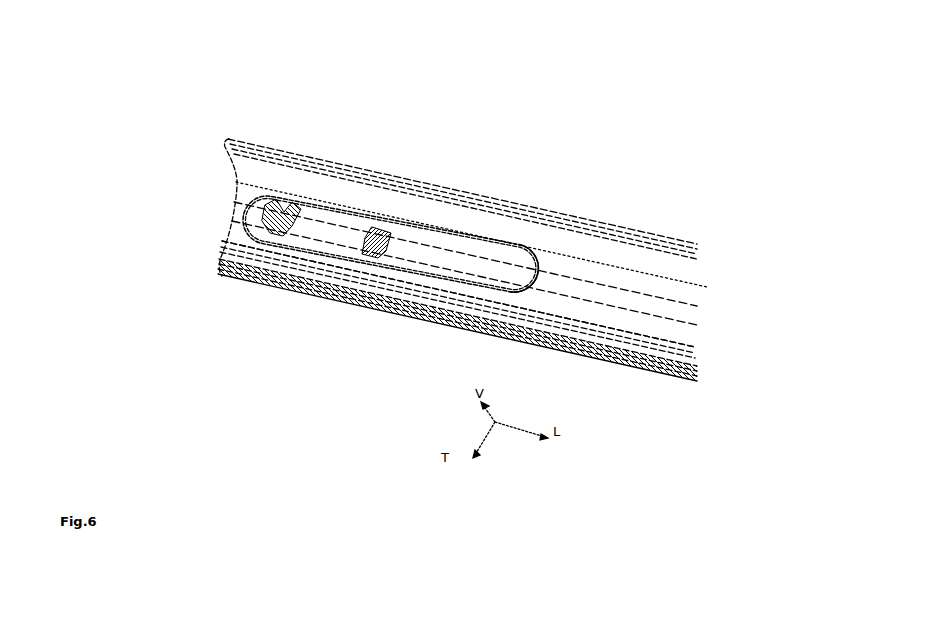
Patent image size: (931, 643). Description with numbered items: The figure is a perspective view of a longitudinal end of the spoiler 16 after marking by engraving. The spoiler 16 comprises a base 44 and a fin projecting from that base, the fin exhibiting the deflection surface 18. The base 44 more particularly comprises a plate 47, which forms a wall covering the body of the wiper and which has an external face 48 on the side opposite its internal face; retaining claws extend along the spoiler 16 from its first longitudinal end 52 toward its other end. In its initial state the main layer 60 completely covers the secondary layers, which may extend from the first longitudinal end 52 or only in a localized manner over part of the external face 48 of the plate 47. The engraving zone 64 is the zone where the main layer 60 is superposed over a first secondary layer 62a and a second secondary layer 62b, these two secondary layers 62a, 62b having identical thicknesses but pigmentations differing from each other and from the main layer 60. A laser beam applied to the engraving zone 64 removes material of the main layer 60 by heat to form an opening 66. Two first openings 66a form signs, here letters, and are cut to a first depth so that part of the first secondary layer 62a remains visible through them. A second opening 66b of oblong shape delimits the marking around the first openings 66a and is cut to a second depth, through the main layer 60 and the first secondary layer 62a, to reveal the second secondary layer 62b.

The spoiler 16 is at (557, 116).
The deflection surface 18 is at (330, 183).
The base 44 is at (688, 332).
The plate 47 is at (458, 294).
The external face 48 is at (591, 285).
The first longitudinal end 52 is at (232, 188).
The main layer 60 is at (310, 237).
The first secondary layer 62a is at (280, 222).
The second secondary layer 62b is at (371, 221).
The engraving zone 64 is at (615, 328).
The opening 66 is at (372, 242).
The first openings 66a is at (417, 230).
The second opening 66b is at (498, 244).